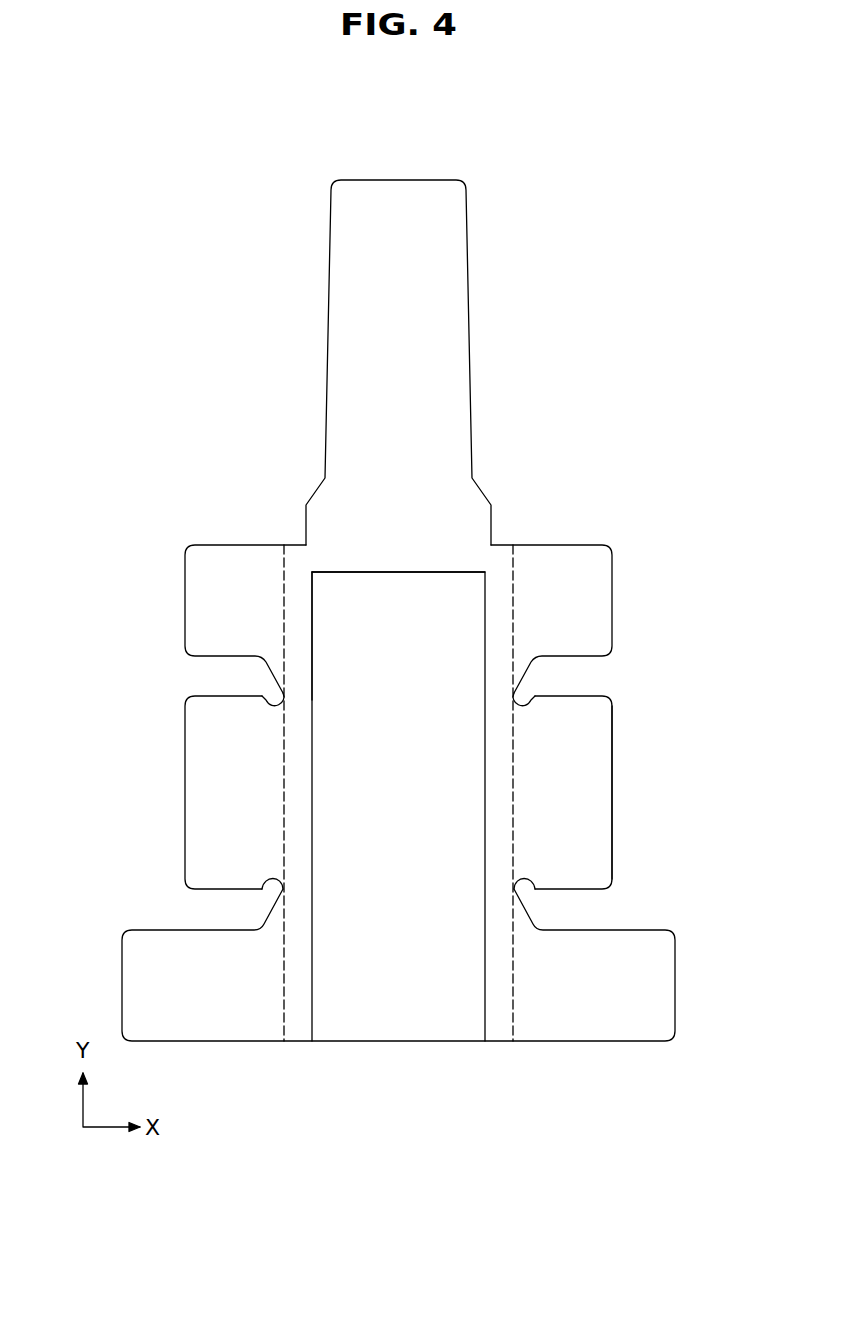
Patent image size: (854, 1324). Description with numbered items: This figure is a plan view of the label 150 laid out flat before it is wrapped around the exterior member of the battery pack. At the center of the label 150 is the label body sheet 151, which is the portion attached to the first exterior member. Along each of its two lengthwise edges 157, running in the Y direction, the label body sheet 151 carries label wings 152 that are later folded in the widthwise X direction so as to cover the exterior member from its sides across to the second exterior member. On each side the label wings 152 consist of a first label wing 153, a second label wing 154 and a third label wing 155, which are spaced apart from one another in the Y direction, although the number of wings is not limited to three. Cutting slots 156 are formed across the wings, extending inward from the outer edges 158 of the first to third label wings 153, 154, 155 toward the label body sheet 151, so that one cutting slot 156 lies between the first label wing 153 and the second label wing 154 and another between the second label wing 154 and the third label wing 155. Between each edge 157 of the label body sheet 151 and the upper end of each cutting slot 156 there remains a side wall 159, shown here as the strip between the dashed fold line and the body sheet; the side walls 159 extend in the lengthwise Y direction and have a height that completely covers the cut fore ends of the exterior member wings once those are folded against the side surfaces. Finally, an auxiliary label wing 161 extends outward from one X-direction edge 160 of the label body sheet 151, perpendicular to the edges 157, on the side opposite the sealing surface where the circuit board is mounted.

The label 150 is at (565, 228).
The label body sheet 151 is at (420, 813).
The label wings 152 is at (573, 525).
The first label wing 153 is at (203, 595).
The second label wing 154 is at (203, 784).
The third label wing 155 is at (133, 986).
The cutting slots 156 is at (267, 710).
The edges of the label body sheet 157 is at (312, 622).
The edges of the label wings 158 is at (612, 826).
The side wall 159 is at (296, 1013).
The edge of the label body sheet 160 is at (378, 572).
The auxiliary label wing 161 is at (396, 200).